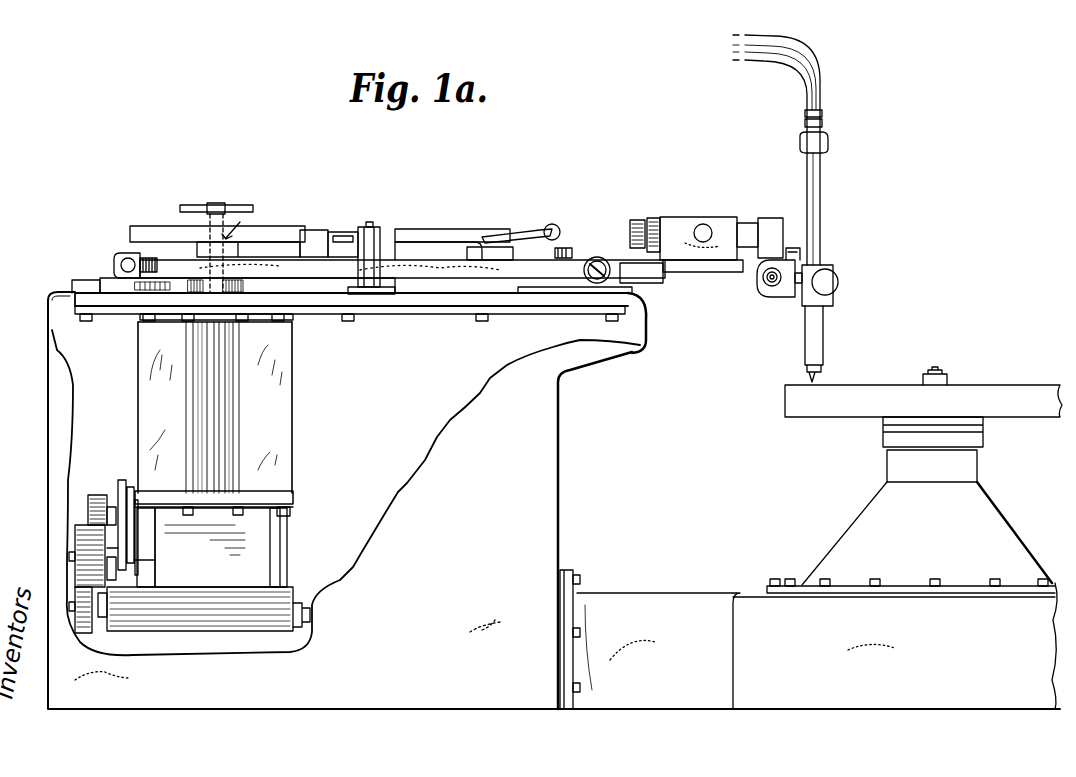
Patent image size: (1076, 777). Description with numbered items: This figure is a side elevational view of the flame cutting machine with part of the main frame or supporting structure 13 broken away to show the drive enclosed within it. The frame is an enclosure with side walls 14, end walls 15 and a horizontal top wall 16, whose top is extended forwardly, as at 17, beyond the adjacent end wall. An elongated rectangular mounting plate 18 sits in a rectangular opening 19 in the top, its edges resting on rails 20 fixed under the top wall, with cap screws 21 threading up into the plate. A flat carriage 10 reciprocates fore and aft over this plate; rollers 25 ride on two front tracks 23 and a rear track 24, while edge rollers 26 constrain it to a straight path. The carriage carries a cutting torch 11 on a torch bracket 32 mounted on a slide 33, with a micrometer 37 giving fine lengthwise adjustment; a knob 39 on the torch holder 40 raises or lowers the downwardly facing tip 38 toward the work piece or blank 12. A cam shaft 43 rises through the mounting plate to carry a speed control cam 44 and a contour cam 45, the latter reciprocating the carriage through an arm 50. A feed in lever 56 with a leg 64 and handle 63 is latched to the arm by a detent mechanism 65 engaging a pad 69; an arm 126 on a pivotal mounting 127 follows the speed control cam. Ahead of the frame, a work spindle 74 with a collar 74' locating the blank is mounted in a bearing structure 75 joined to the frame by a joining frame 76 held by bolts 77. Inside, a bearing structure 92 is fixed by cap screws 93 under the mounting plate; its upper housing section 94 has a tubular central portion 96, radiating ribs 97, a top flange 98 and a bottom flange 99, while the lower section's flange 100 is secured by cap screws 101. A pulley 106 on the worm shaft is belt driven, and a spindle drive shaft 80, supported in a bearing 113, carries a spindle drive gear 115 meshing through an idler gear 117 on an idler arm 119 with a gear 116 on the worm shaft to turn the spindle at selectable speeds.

The carriage 10 is at (606, 191).
The cutting torch 11 is at (820, 179).
The work piece or blank 12 is at (998, 388).
The main frame or supporting structure 13 is at (618, 501).
The side walls 14 is at (384, 474).
The end walls 15 is at (48, 341).
The top wall 16 is at (70, 290).
The forward extension of frame top 17 is at (650, 341).
The mounting plate 18 is at (425, 315).
The rectangular opening 19 is at (80, 290).
The rails 20 is at (510, 315).
The cap screws 21 is at (88, 319).
The front tracks 23 is at (640, 289).
The rear track 24 is at (93, 286).
The rollers 25 is at (122, 260).
The edge rollers 26 is at (158, 278).
The torch bracket 32 is at (767, 210).
The slide 33 is at (712, 280).
The micrometer 37 is at (640, 218).
The torch tip 38 is at (820, 378).
The knob 39 is at (838, 282).
The torch holder 40 is at (818, 268).
The cam shaft 43 is at (248, 206).
The speed control cam 44 is at (188, 208).
The contour cam 45 is at (253, 240).
The arm 50 is at (313, 243).
The feed in lever 56 is at (400, 242).
The handle 63 is at (540, 245).
The lever leg 64 is at (438, 245).
The detent mechanism 65 is at (533, 243).
The pad 69 is at (478, 252).
The work spindle 74 is at (946, 360).
The collar 74' is at (902, 449).
The bearing structure 75 is at (1016, 501).
The joining frame 76 is at (700, 602).
The bolts 77 is at (583, 623).
The spindle drive shaft 80 is at (309, 583).
The bearing structure 92 is at (105, 395).
The cap screws 93 is at (148, 321).
The upper housing section 94 is at (233, 406).
The central portion 96 is at (230, 429).
The ribs 97 is at (284, 384).
The top flange 98 is at (258, 311).
The bottom flange 99 is at (273, 491).
The flange 100 is at (288, 509).
The cap screws 101 is at (186, 513).
The pulley 106 is at (123, 487).
The bearing 113 is at (203, 633).
The spindle drive gear 115 is at (80, 636).
The gear 116 is at (88, 497).
The idler gear 117 is at (72, 536).
The idler arm 119 is at (110, 548).
The arm 126 is at (291, 228).
The pivotal mounting 127 is at (371, 222).